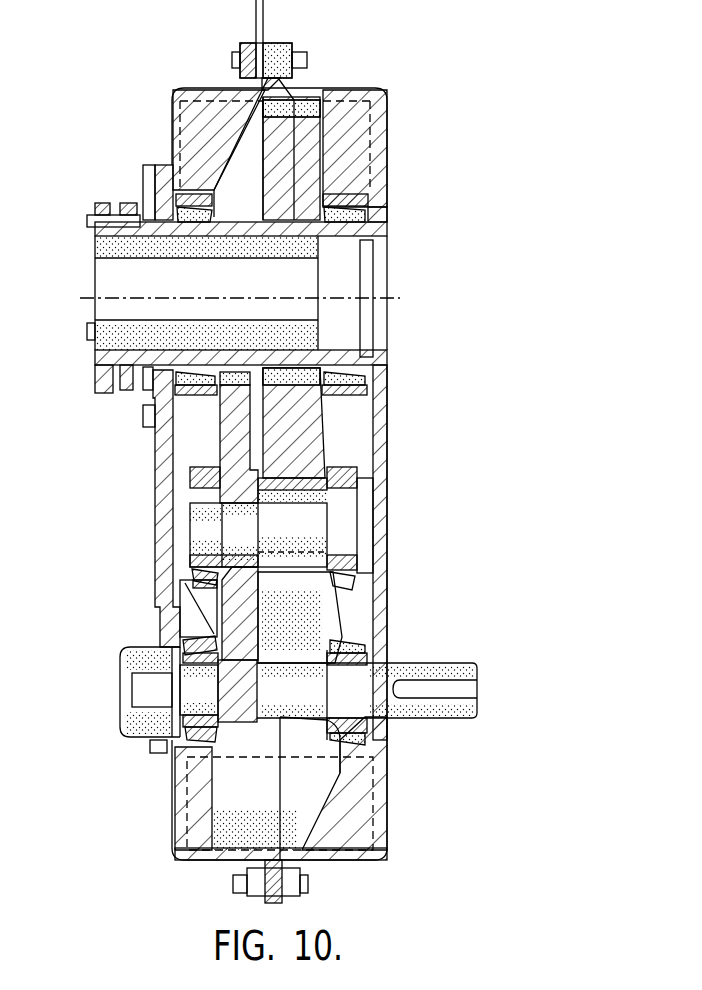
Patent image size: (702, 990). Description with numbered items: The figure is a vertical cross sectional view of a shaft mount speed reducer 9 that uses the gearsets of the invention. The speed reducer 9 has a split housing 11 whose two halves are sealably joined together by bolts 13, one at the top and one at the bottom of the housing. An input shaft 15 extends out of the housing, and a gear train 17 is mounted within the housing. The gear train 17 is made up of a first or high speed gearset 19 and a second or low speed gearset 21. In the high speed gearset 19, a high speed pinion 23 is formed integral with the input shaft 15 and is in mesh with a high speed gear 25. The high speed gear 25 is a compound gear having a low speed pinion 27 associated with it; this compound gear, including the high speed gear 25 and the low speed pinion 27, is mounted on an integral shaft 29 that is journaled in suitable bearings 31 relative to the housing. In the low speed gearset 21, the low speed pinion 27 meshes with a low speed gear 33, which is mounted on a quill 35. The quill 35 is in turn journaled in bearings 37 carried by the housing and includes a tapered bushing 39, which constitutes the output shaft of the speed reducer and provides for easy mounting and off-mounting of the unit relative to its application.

The shaft mount speed reducer 9 is at (500, 373).
The split housing 11 is at (387, 836).
The bolts 13 is at (293, 58).
The input shaft 15 is at (455, 717).
The gear train 17 is at (246, 770).
The high speed gearset 19 is at (253, 652).
The low speed gearset 21 is at (324, 457).
The high speed pinion 23 is at (233, 733).
The high speed gear 25 is at (253, 623).
The low speed pinion 27 is at (337, 468).
The integral shaft 29 is at (300, 535).
The bearings 31 is at (207, 570).
The low speed gear 33 is at (292, 163).
The quill 35 is at (388, 369).
The bearings 37 is at (172, 208).
The tapered bushing 39 is at (95, 383).